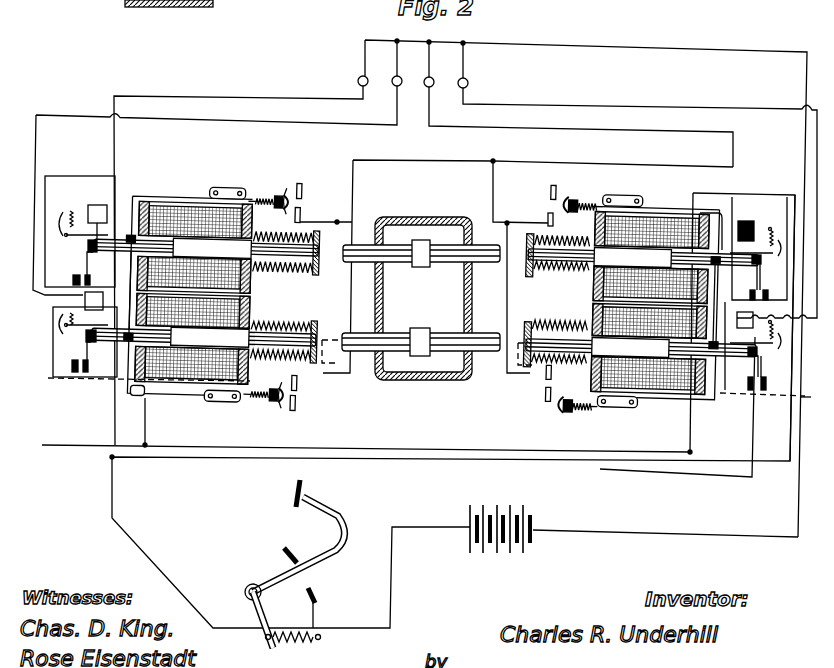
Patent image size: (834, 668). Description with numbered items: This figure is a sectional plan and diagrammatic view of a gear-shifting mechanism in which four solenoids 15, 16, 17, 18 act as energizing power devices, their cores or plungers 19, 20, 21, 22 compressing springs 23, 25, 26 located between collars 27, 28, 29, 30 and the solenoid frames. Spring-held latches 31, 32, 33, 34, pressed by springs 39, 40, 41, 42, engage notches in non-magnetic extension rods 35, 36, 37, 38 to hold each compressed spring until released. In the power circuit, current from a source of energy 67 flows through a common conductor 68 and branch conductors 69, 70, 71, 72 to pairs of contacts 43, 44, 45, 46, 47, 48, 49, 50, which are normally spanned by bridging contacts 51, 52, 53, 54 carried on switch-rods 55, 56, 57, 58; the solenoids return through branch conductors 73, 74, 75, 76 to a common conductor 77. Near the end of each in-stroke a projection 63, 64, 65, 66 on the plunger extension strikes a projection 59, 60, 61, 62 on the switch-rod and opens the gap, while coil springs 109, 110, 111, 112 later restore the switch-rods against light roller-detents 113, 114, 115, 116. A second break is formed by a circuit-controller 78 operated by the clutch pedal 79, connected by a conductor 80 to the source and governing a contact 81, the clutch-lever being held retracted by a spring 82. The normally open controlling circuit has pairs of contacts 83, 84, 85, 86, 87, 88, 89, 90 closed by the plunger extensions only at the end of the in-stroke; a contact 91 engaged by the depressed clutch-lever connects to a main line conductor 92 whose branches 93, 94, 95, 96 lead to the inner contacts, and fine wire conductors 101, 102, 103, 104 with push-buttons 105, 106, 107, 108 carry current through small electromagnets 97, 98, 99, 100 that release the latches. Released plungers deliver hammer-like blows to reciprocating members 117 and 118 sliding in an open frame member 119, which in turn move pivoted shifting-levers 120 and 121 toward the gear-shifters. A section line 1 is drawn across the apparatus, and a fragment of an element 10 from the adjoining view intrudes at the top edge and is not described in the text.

The section line 1 is at (431, 391).
The hatched member (Fig. 1 fragment) 10 is at (200, 7).
The solenoid 15 is at (180, 215).
The solenoid 16 is at (640, 228).
The solenoid 17 is at (168, 398).
The solenoid 18 is at (630, 408).
The plunger 19 is at (262, 236).
The plunger 20 is at (643, 244).
The plunger 21 is at (262, 324).
The plunger 22 is at (572, 325).
The spring 23 is at (265, 272).
The spring 25 is at (312, 365).
The spring 26 is at (528, 370).
The collar 27 is at (320, 238).
The collar 28 is at (537, 274).
The collar 29 is at (314, 320).
The collar 30 is at (543, 325).
The spring-held latch 31 is at (110, 240).
The spring-held latch 32 is at (762, 240).
The spring-held latch 33 is at (96, 345).
The spring-held latch 34 is at (750, 378).
The rod 35 is at (146, 242).
The rod 36 is at (685, 252).
The rod 37 is at (128, 398).
The rod 38 is at (662, 392).
The spring 39 is at (64, 212).
The spring 40 is at (761, 261).
The spring 41 is at (82, 323).
The spring 42 is at (758, 351).
The contact 43 is at (299, 182).
The contact 44 is at (299, 208).
The contact 45 is at (548, 188).
The contact 46 is at (547, 203).
The contact 47 is at (300, 394).
The contact 48 is at (300, 408).
The contact 49 is at (547, 403).
The contact 50 is at (558, 410).
The bridging contact 51 is at (284, 188).
The bridging contact 52 is at (575, 188).
The bridging contact 53 is at (283, 402).
The bridging contact 54 is at (572, 414).
The switch-rod 55 is at (207, 198).
The switch-rod 56 is at (670, 200).
The switch-rod 57 is at (190, 398).
The switch-rod 58 is at (675, 400).
The projection 59 is at (140, 212).
The projection 60 is at (730, 210).
The projection 61 is at (100, 380).
The projection 62 is at (718, 398).
The projection 63 is at (129, 252).
The projection 64 is at (715, 263).
The projection 65 is at (128, 338).
The projection 66 is at (716, 341).
The source of energy 67 is at (500, 543).
The common conductor 68 is at (665, 525).
The branch conductor 69 is at (324, 213).
The branch conductor 70 is at (532, 217).
The branch conductor 71 is at (528, 266).
The branch conductor 72 is at (515, 267).
The branch conductor 73 is at (80, 222).
The branch conductor 74 is at (147, 395).
The branch conductor 75 is at (744, 318).
The branch conductor 76 is at (691, 420).
The common conductor 77 is at (452, 411).
The circuit-controller 78 is at (330, 556).
The pedal 79 is at (292, 492).
The conductor 80 is at (364, 605).
The contact 81 is at (283, 555).
The spring 82 is at (293, 649).
The contact 83 is at (75, 276).
The contact 84 is at (93, 253).
The contact 85 is at (768, 293).
The contact 86 is at (752, 290).
The contact 87 is at (72, 362).
The contact 88 is at (98, 356).
The contact 89 is at (767, 380).
The contact 90 is at (765, 390).
The contact 91 is at (333, 596).
The main line conductor 92 is at (245, 616).
The branch 93 is at (85, 369).
The branch 94 is at (128, 295).
The branch 95 is at (677, 413).
The branch 96 is at (728, 318).
The electromagnet 97 is at (96, 211).
The electromagnet 98 is at (744, 221).
The electromagnet 99 is at (97, 299).
The electromagnet 100 is at (742, 312).
The conductor 101 is at (460, 284).
The conductor 102 is at (215, 190).
The conductor 103 is at (581, 127).
The conductor 104 is at (640, 203).
The push-button 105 is at (358, 81).
The push-button 106 is at (413, 70).
The push-button 107 is at (432, 86).
The push-button 108 is at (468, 83).
The coil spring 109 is at (262, 198).
The coil spring 110 is at (588, 204).
The coil spring 111 is at (256, 400).
The coil spring 112 is at (568, 382).
The roller-detent 113 is at (226, 188).
The roller-detent 114 is at (636, 188).
The roller-detent 115 is at (228, 402).
The roller-detent 116 is at (616, 409).
The reciprocating member 117 is at (394, 250).
The reciprocating member 118 is at (395, 345).
The open frame member 119 is at (443, 374).
The shifting-lever 120 is at (428, 263).
The shifting-lever 121 is at (428, 335).